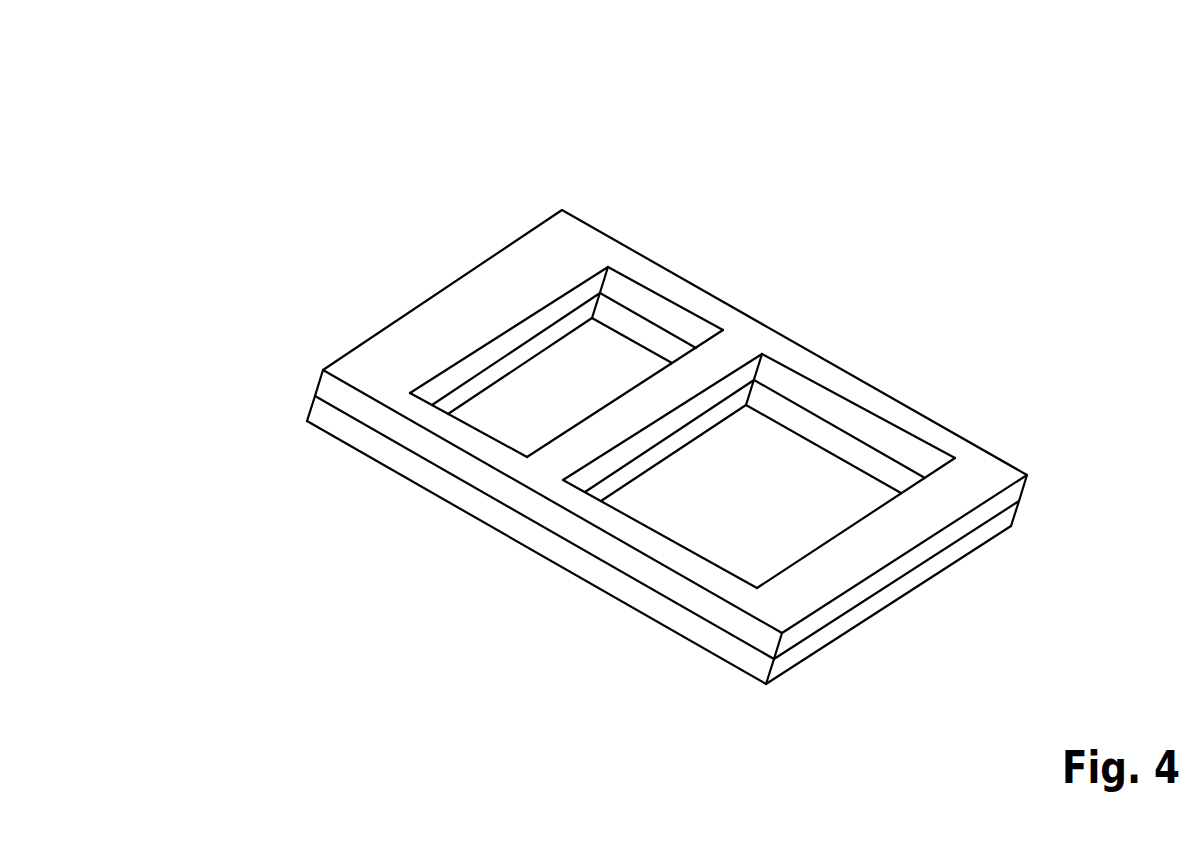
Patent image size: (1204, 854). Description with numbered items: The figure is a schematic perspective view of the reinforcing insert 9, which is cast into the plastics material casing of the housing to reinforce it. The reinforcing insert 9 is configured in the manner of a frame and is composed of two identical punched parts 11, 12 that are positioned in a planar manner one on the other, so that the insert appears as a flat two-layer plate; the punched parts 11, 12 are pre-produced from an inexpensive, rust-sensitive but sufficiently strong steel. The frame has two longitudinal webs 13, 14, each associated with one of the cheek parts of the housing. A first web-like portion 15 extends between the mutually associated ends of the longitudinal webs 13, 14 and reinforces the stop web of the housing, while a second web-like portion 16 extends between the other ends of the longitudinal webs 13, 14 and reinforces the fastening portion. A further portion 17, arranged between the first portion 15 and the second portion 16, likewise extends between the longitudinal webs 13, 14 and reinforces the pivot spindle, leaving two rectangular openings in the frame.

The reinforcing insert 9 is at (641, 209).
The punched part 11 is at (327, 386).
The punched part 12 is at (317, 412).
The longitudinal web 13 is at (845, 383).
The longitudinal web 14 is at (630, 537).
The first web-like portion 15 is at (453, 312).
The second web-like portion 16 is at (655, 392).
The portion 17 is at (883, 537).